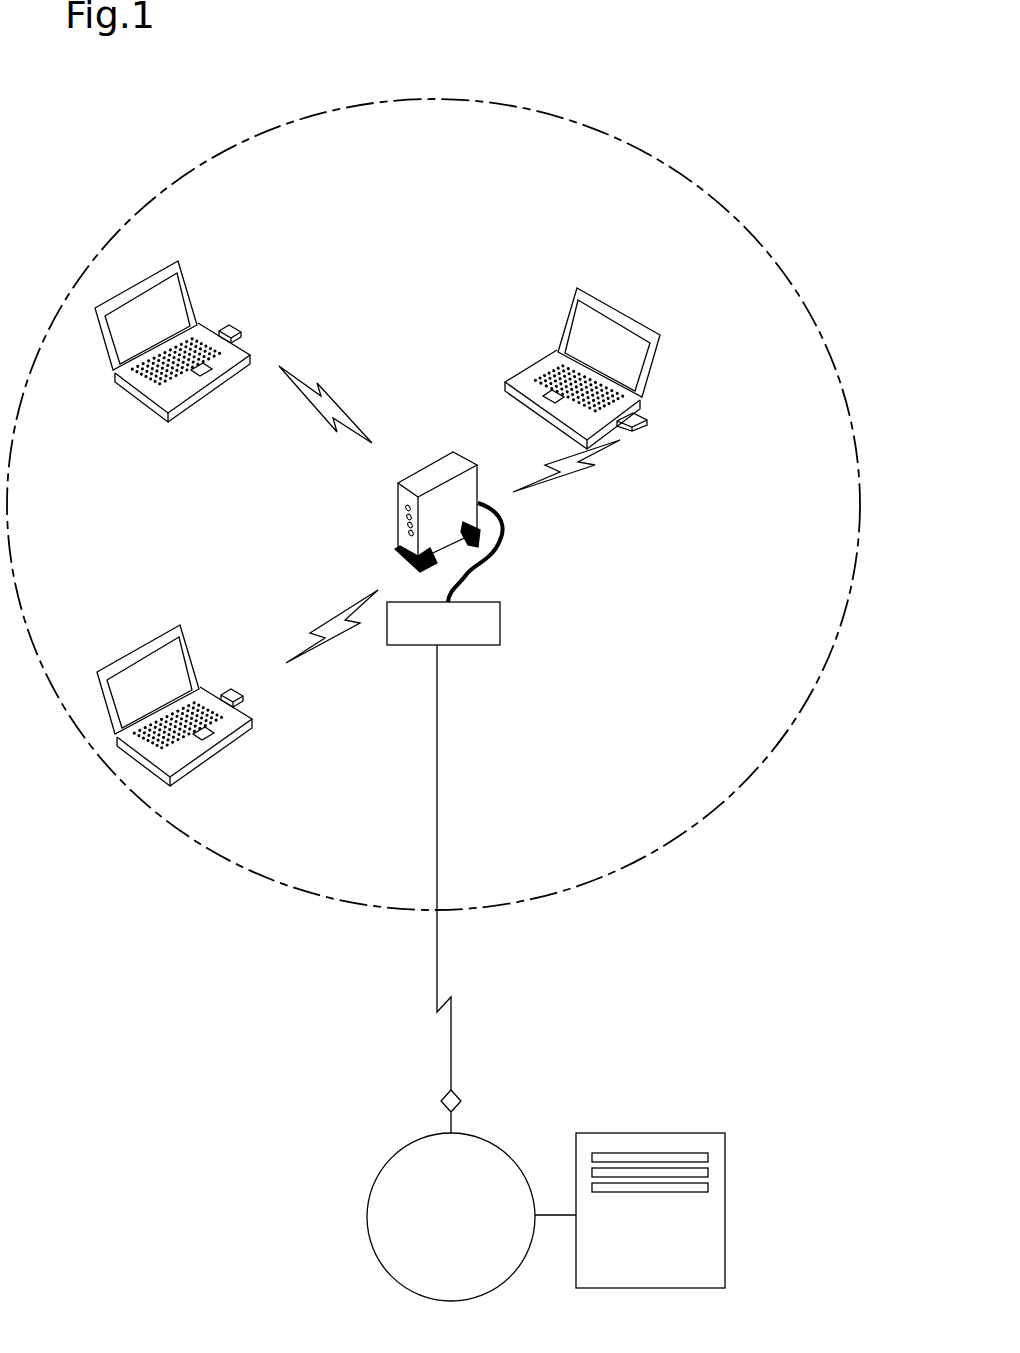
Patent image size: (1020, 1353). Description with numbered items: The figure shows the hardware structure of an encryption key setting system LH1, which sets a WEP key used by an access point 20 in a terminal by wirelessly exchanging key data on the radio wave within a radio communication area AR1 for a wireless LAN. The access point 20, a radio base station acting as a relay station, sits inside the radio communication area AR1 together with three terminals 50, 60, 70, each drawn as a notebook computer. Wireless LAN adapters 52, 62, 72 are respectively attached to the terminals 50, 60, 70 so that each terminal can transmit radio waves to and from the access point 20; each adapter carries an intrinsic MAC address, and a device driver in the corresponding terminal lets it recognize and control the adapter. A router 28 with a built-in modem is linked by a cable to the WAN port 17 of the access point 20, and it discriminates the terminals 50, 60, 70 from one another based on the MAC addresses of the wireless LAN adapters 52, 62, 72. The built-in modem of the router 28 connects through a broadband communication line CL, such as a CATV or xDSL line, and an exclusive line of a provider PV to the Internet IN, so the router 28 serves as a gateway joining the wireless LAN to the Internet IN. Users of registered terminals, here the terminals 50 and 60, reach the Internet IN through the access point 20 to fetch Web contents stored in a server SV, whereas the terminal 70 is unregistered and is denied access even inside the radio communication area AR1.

The encryption key setting system LH1 is at (718, 116).
The radio communication area AR1 is at (750, 228).
The terminal 60 is at (187, 277).
The wireless LAN adapter 62 is at (229, 327).
The terminal 50 is at (654, 373).
The wireless LAN adapter 52 is at (648, 426).
The terminal 70 is at (192, 640).
The wireless LAN adapter 72 is at (232, 691).
The access point 20 is at (400, 540).
The WAN port 17 is at (478, 502).
The router 28 is at (501, 622).
The broadband communication line CL is at (437, 965).
The provider PV is at (441, 1101).
The Internet IN is at (368, 1207).
The server SV is at (708, 1227).